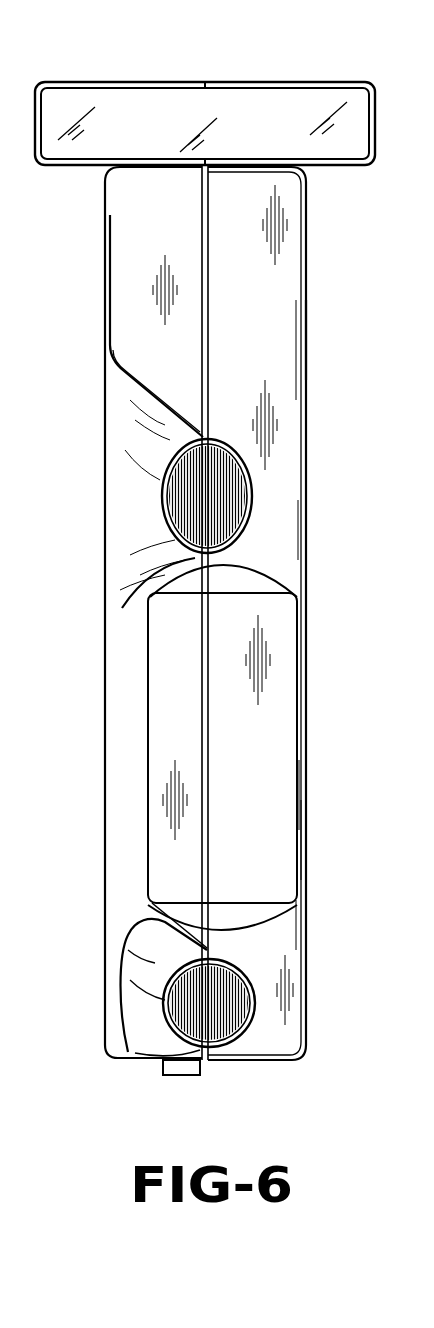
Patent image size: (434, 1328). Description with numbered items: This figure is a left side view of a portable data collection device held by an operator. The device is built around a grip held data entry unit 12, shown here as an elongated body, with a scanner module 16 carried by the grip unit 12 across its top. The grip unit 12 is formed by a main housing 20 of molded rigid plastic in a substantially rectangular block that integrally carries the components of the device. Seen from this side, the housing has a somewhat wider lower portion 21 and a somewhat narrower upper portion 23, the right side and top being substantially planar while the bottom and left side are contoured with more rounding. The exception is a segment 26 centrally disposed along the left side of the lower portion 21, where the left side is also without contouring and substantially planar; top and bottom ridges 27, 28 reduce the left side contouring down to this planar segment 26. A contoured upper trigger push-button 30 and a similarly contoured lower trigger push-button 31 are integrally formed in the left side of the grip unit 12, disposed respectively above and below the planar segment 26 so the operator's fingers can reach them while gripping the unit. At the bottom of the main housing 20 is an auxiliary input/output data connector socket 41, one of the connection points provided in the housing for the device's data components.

The grip held data entry unit 12 is at (306, 247).
The scanner module 16 is at (138, 81).
The main housing 20 is at (298, 650).
The lower portion 21 is at (305, 841).
The upper portion 23 is at (307, 338).
The planar segment 26 is at (250, 777).
The top ridge 27 is at (240, 585).
The bottom ridge 28 is at (237, 920).
The upper trigger push-button 30 is at (215, 522).
The lower trigger push-button 31 is at (215, 1018).
The auxiliary input/output data connector socket 41 is at (190, 1072).